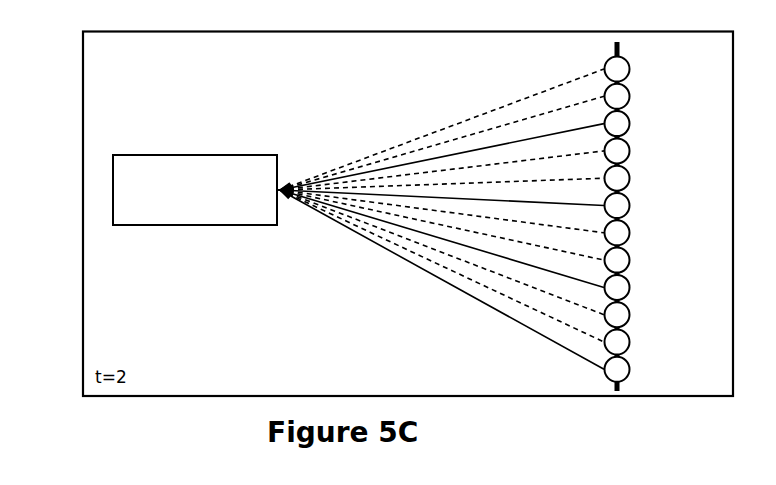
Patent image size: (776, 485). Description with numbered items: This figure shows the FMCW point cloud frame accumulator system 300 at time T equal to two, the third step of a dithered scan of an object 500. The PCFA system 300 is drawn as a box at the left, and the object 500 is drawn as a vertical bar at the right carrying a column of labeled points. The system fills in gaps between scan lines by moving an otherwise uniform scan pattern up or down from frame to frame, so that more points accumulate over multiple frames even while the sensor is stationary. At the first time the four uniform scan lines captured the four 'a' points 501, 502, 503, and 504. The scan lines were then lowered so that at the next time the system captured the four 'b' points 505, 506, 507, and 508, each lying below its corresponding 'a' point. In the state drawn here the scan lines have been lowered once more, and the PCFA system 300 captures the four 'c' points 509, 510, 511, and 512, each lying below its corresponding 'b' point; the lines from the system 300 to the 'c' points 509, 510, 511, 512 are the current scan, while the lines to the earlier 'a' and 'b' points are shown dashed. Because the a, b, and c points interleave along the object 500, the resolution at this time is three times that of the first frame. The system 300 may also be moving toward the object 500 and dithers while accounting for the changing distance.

The FMCW point cloud frame accumulator (PCFA) system 300 is at (195, 190).
The object 500 is at (614, 44).
The 'a' point 501 is at (630, 69).
The 'b' point 505 is at (630, 96).
The 'c' point 509 is at (630, 124).
The 'a' point 502 is at (630, 151).
The 'b' point 506 is at (630, 178).
The 'c' point 510 is at (630, 206).
The 'a' point 503 is at (630, 233).
The 'b' point 507 is at (630, 260).
The 'c' point 511 is at (630, 287).
The 'a' point 504 is at (630, 315).
The 'b' point 508 is at (630, 342).
The 'c' point 512 is at (630, 369).